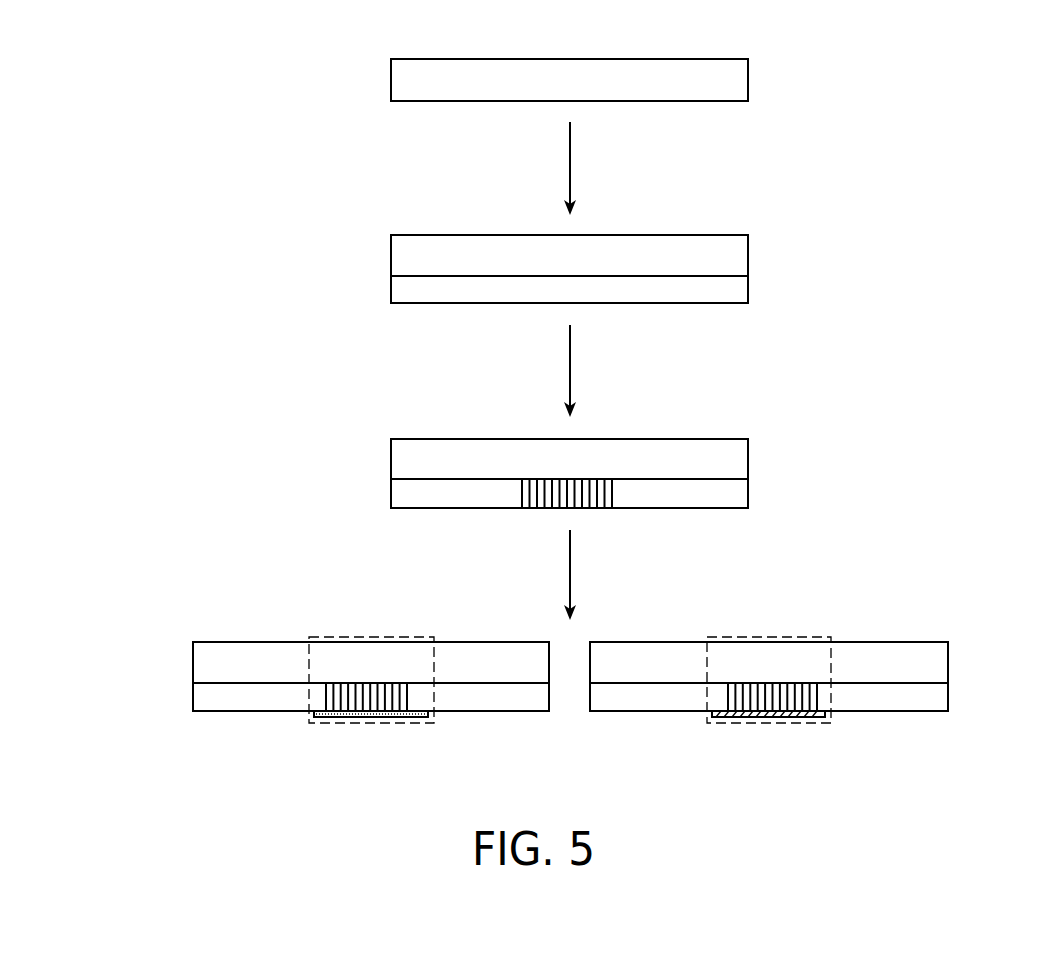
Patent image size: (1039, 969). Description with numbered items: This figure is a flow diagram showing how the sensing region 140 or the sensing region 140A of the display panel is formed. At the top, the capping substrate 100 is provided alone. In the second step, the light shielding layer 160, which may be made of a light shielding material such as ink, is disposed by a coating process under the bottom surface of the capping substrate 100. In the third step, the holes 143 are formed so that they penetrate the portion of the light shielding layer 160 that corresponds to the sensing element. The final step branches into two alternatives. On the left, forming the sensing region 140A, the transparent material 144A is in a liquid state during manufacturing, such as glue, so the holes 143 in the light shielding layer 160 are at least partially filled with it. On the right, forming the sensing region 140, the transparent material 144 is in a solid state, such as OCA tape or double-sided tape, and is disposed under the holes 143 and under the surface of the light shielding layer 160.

The capping substrate 100 is at (727, 82).
The light shielding layer 160 is at (727, 290).
The holes 143 is at (600, 493).
The transparent material 144A is at (402, 718).
The transparent material 144 is at (798, 718).
The sensing region 140A is at (338, 618).
The sensing region 140 is at (825, 618).